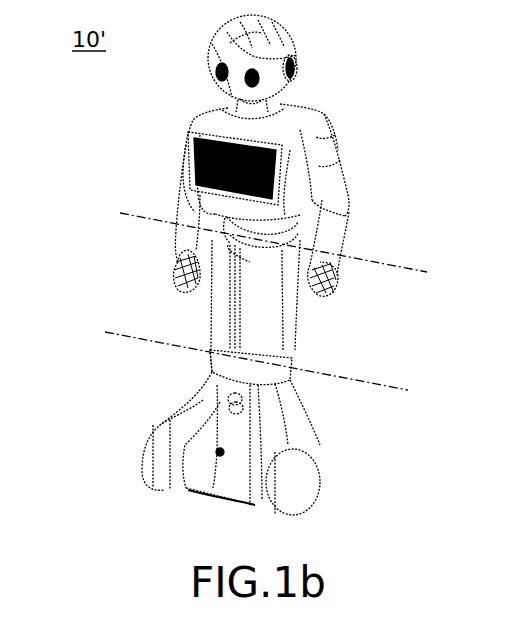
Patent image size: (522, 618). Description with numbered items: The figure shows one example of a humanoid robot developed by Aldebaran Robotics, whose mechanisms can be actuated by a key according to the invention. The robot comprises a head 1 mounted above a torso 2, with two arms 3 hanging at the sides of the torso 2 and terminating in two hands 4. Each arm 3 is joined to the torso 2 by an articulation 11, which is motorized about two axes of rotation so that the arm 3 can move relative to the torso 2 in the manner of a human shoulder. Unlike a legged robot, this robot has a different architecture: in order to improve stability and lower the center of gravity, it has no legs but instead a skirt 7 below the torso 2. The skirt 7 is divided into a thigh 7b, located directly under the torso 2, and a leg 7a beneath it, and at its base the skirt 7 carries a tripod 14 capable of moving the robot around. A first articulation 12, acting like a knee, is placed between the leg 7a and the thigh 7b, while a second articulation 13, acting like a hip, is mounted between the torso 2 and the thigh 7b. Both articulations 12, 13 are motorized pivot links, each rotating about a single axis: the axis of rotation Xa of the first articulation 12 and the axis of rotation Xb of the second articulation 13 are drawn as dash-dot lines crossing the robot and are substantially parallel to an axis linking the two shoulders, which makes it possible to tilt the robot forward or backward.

The head 1 is at (277, 40).
The torso 2 is at (293, 117).
The arm 3 is at (347, 180).
The hand 4 is at (172, 252).
The skirt 7 is at (115, 290).
The leg 7a is at (273, 428).
The thigh 7b is at (273, 332).
The articulation 11 is at (317, 142).
The first articulation 12 is at (265, 357).
The second articulation 13 is at (278, 233).
The tripod 14 is at (300, 488).
The axis of rotation Xa is at (390, 383).
The axis of rotation Xb is at (410, 268).